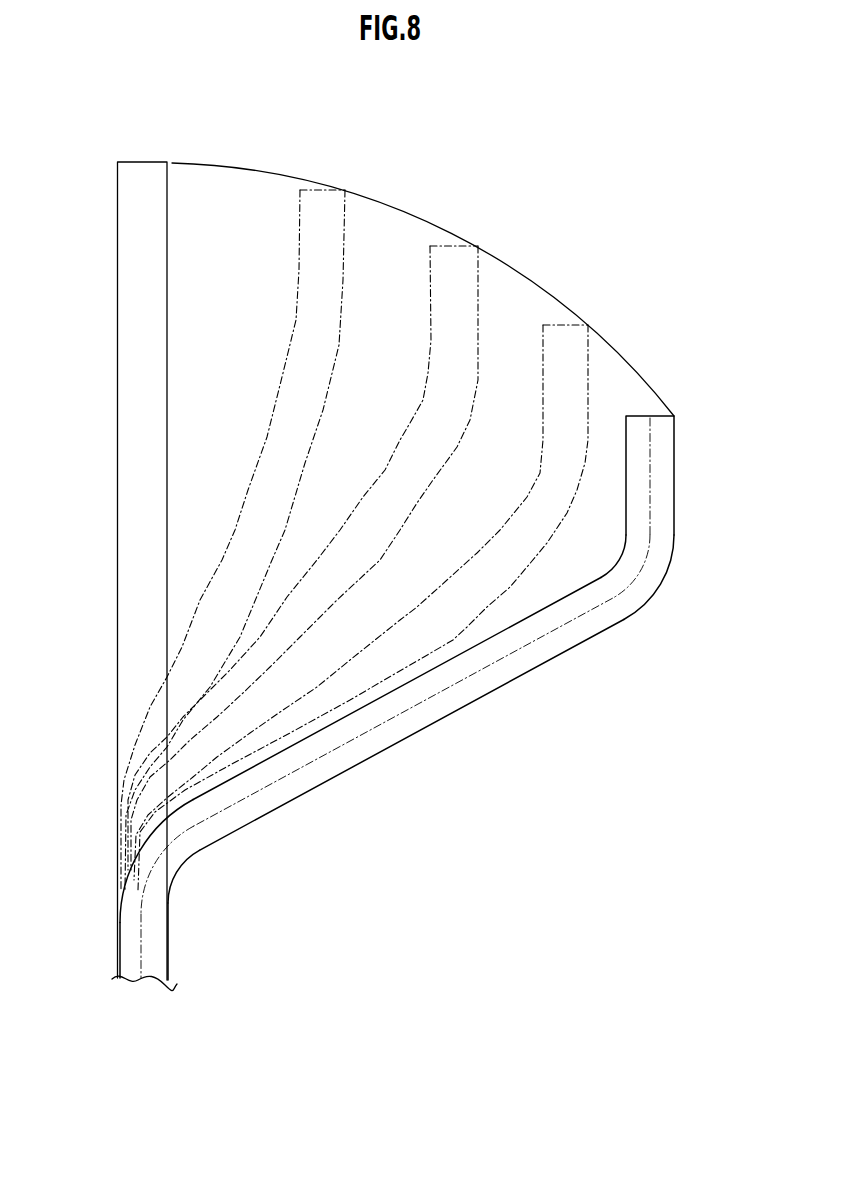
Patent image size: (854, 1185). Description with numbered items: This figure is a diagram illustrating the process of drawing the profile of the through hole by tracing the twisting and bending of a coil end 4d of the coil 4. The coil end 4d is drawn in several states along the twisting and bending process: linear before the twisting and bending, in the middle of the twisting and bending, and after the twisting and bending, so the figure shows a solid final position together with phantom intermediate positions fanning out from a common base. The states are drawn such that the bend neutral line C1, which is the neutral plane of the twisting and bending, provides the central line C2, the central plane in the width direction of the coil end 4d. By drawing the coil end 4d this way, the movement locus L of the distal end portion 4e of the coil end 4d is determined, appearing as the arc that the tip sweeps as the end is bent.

The coil 4 is at (433, 698).
The coil end 4d is at (128, 516).
The distal end portion 4e is at (665, 475).
The movement locus L is at (540, 284).
The bend neutral line C1 is at (643, 563).
The central line C2 is at (457, 682).